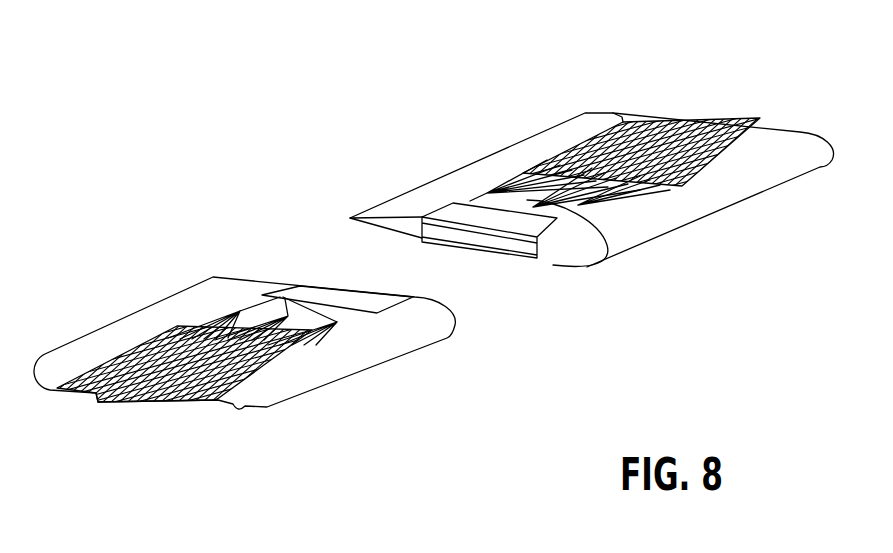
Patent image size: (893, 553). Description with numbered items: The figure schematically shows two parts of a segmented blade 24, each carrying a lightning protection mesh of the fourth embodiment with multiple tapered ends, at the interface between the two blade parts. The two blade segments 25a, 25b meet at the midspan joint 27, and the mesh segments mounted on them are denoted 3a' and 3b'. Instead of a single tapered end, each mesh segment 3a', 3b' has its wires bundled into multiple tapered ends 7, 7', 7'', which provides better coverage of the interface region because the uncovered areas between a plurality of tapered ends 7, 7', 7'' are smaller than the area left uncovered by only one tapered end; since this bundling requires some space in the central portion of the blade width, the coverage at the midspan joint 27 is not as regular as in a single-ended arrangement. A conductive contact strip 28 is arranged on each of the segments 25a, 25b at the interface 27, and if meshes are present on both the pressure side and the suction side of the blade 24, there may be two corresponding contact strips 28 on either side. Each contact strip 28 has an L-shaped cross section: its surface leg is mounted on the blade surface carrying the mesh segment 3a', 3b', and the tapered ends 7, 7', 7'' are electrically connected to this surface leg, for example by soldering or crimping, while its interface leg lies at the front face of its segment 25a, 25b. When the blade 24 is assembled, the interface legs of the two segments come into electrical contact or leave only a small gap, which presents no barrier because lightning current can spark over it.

The segmented blade 24 is at (250, 98).
The blade segment 25a is at (103, 347).
The blade segment 25b is at (547, 140).
The mesh segment 3a' is at (197, 322).
The mesh segment 3b' is at (642, 204).
The tapered end 7 is at (388, 203).
The tapered end 7' is at (427, 261).
The tapered end 7'' is at (469, 298).
The conductive contact strip 28 is at (283, 298).
The midspan joint 27 is at (528, 318).